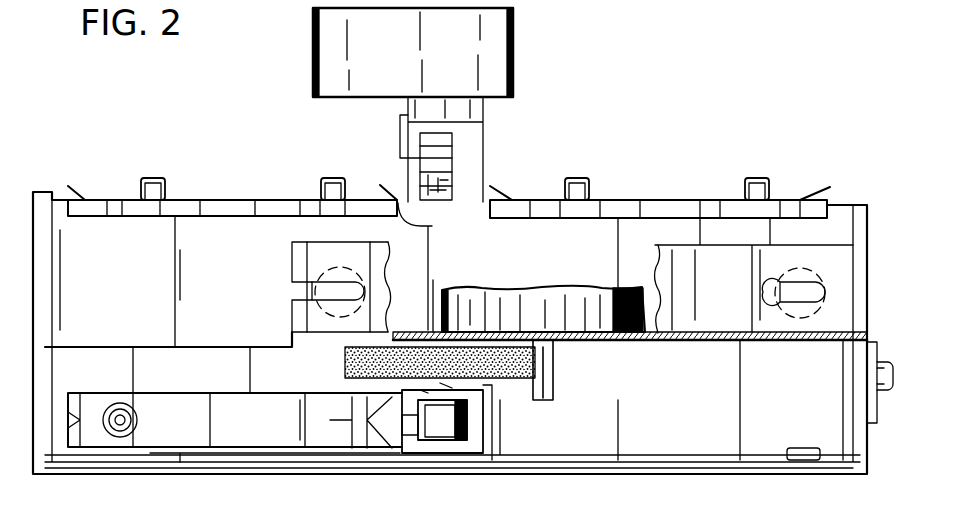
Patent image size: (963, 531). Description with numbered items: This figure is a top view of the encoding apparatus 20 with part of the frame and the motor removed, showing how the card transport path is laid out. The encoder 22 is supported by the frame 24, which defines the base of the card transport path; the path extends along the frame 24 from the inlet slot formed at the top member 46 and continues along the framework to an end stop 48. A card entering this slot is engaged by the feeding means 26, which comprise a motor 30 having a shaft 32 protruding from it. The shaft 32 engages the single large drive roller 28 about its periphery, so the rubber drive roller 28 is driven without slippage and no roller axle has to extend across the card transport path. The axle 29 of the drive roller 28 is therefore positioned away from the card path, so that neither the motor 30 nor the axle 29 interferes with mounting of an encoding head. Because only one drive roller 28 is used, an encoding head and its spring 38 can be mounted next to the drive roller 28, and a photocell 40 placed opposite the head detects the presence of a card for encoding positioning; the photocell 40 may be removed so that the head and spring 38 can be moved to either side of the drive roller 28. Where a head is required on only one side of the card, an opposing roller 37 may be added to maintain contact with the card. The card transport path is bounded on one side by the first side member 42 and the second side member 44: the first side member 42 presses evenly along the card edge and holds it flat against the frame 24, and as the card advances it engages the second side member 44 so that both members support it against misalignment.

The encoding apparatus 20 is at (608, 107).
The encoder 22 is at (495, 60).
The frame 24 is at (110, 260).
The feeding means 26 is at (606, 342).
The drive roller 28 is at (506, 379).
The axle 29 is at (428, 393).
The motor 30 is at (643, 300).
The shaft 32 is at (553, 385).
The opposing roller 37 is at (459, 443).
The spring 38 is at (244, 428).
The photocell 40 is at (386, 198).
The first side member 42 is at (234, 205).
The second side member 44 is at (625, 205).
The top member 46 is at (50, 428).
The end stop 48 is at (867, 380).